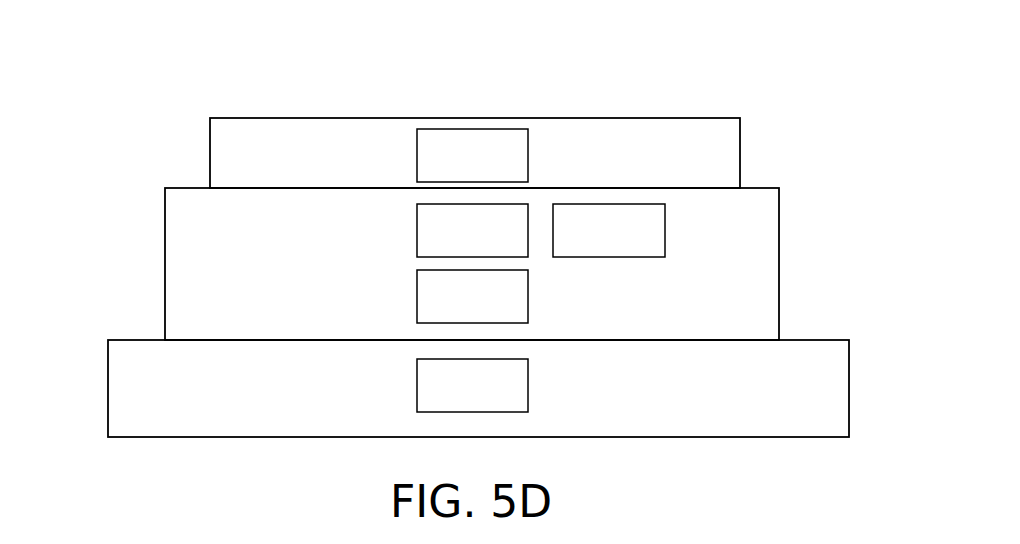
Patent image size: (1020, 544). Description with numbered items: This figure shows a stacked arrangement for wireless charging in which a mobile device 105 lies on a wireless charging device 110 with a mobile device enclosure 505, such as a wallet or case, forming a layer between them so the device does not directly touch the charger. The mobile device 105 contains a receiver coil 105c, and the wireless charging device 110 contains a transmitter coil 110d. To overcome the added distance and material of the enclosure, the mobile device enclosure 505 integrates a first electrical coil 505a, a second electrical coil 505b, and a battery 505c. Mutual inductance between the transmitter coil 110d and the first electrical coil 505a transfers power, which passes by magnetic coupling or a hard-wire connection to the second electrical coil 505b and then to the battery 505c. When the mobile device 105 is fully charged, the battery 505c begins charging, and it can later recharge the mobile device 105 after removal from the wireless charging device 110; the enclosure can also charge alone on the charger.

The mobile device 105 is at (553, 118).
The mobile device enclosure 505 is at (165, 217).
The wireless charging device 110 is at (800, 340).
The receiver coil 105c is at (472, 155).
The first electrical coil 505a is at (472, 230).
The second electrical coil 505b is at (472, 296).
The battery 505c is at (609, 230).
The transmitter coil 110d is at (472, 385).